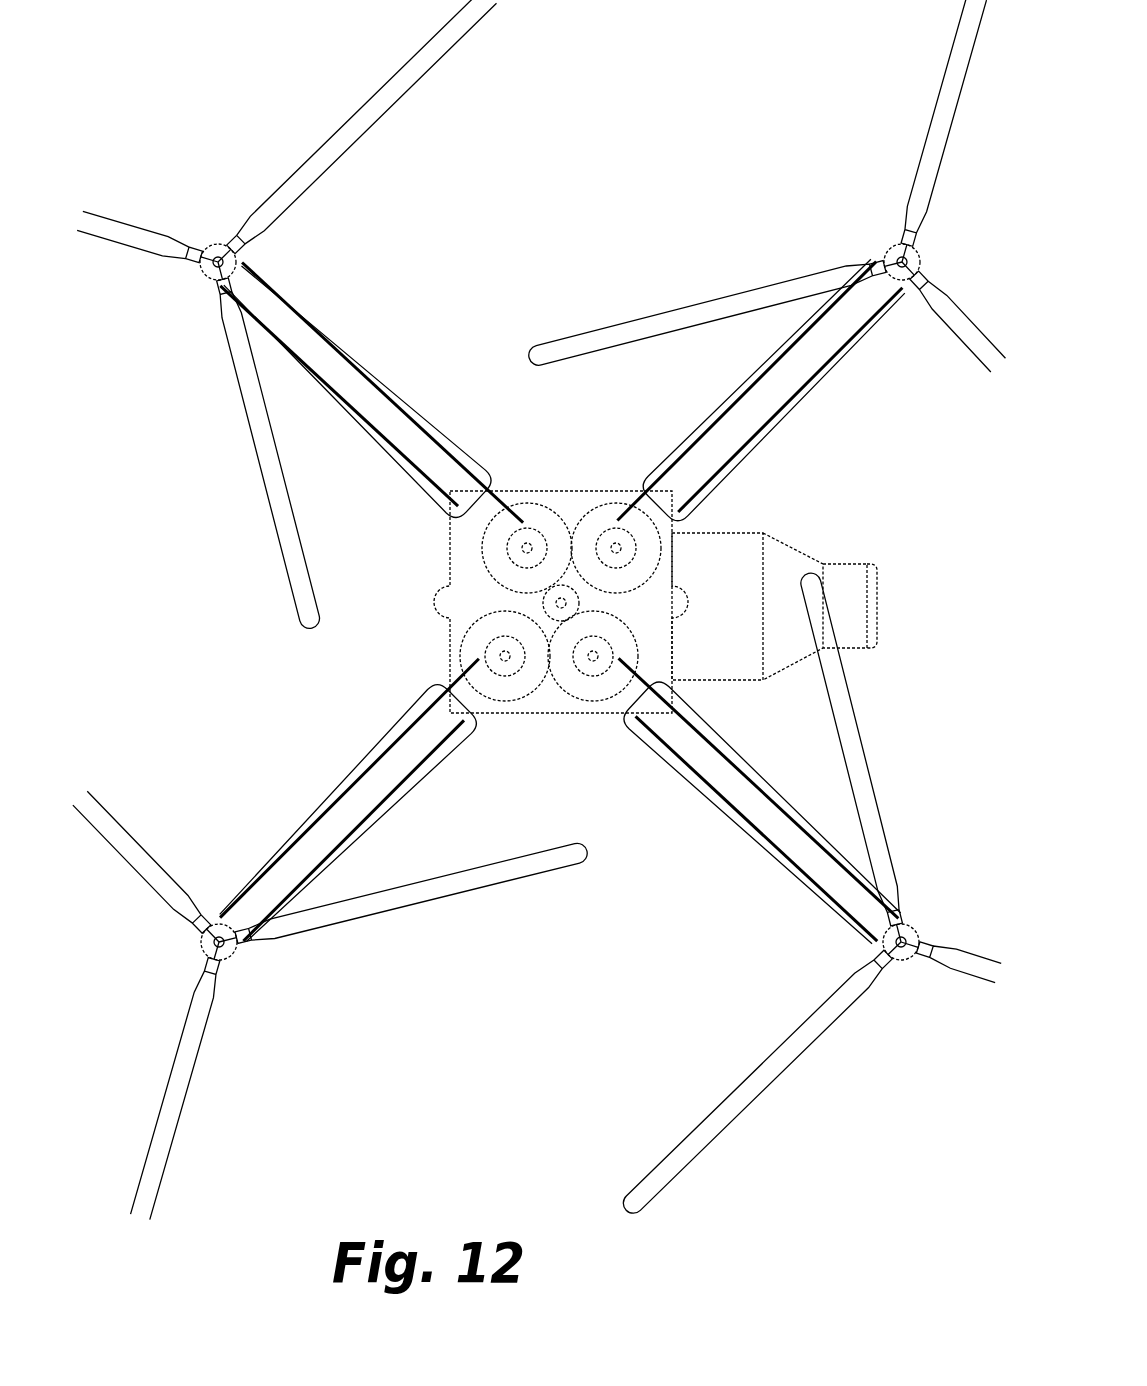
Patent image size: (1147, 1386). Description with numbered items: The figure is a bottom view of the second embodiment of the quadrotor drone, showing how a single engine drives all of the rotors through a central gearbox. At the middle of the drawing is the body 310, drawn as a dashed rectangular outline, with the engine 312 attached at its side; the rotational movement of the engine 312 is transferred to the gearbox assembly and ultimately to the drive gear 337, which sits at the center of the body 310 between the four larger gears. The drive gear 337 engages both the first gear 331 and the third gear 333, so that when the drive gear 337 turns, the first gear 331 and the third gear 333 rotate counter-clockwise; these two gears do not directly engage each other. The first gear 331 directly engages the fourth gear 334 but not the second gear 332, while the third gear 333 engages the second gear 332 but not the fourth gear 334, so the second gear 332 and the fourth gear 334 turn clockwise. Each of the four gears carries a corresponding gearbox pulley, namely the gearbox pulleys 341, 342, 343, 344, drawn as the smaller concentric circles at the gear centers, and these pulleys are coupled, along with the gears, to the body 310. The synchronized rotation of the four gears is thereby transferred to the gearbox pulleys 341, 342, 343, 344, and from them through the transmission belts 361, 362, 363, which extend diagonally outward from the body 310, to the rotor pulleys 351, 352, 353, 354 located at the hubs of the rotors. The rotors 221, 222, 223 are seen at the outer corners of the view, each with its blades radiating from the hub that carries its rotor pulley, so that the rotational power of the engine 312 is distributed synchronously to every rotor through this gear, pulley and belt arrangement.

The rotor 221 is at (810, 894).
The rotor 222 is at (766, 186).
The rotor 223 is at (331, 610).
The body 310 is at (655, 648).
The engine 312 is at (740, 567).
The first gear 331 is at (590, 690).
The second gear 332 is at (608, 515).
The third gear 333 is at (543, 520).
The fourth gear 334 is at (520, 688).
The drive gear 337 is at (550, 605).
The gearbox pulley 341 is at (585, 675).
The gearbox pulley 342 is at (587, 530).
The gearbox pulley 343 is at (500, 563).
The gearbox pulley 344 is at (490, 648).
The rotor pulley 351 is at (929, 900).
The rotor pulley 352 is at (940, 232).
The rotor pulley 353 is at (185, 311).
The rotor pulley 354 is at (258, 995).
The transmission belt 361 is at (725, 822).
The transmission belt 362 is at (808, 383).
The transmission belt 363 is at (380, 376).